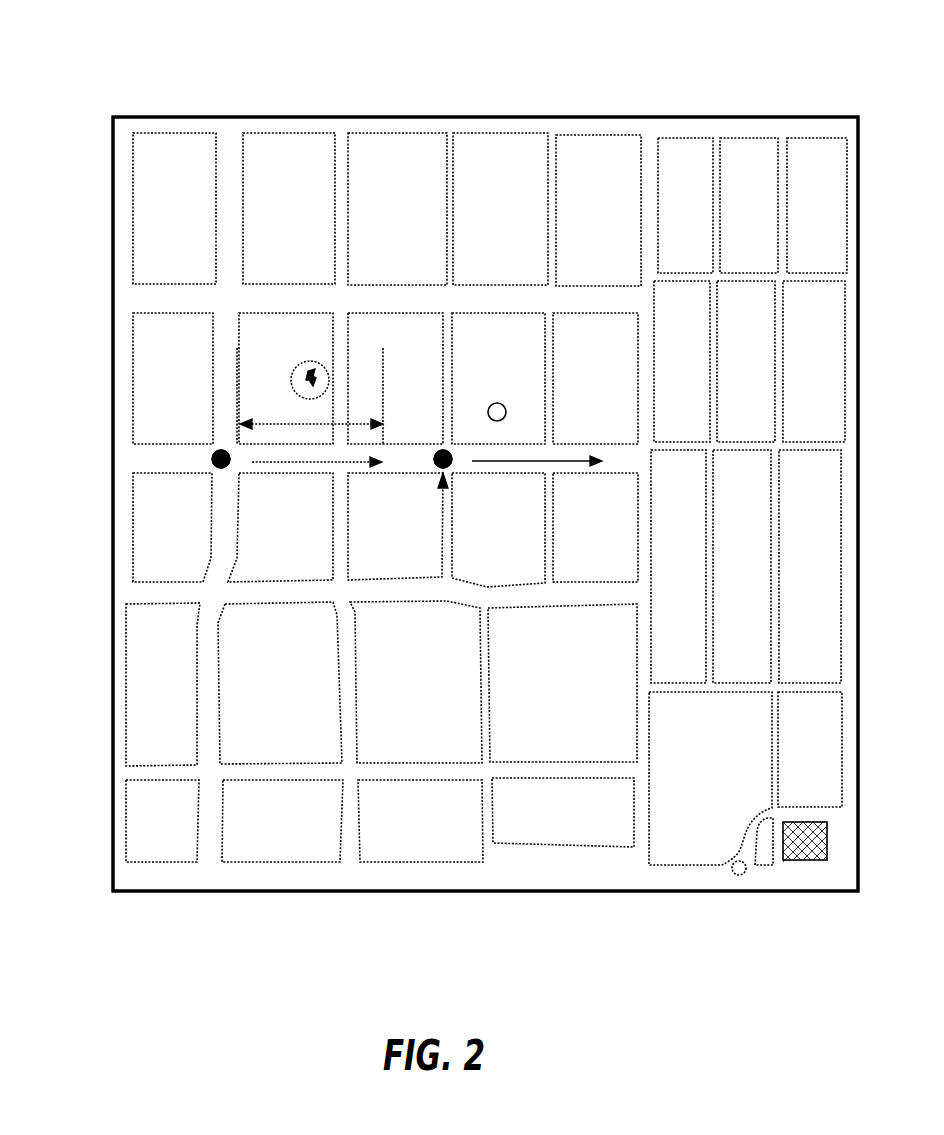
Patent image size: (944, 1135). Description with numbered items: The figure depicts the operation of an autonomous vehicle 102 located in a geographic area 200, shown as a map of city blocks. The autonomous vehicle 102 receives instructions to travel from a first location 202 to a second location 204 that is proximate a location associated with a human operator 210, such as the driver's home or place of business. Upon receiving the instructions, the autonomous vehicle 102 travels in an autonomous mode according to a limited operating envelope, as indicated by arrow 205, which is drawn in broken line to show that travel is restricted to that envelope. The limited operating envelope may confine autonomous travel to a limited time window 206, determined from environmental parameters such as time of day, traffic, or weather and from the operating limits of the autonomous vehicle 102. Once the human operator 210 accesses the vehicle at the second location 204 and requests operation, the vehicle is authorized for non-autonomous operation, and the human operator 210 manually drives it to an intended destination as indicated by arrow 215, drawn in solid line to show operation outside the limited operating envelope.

The geographic area 200 is at (138, 52).
The autonomous vehicle 102 is at (221, 450).
The first location 202 is at (190, 495).
The second location 204 is at (445, 490).
The arrow 205 is at (333, 463).
The limited time window 206 is at (310, 362).
The human operator 210 is at (497, 402).
The arrow 215 is at (563, 462).